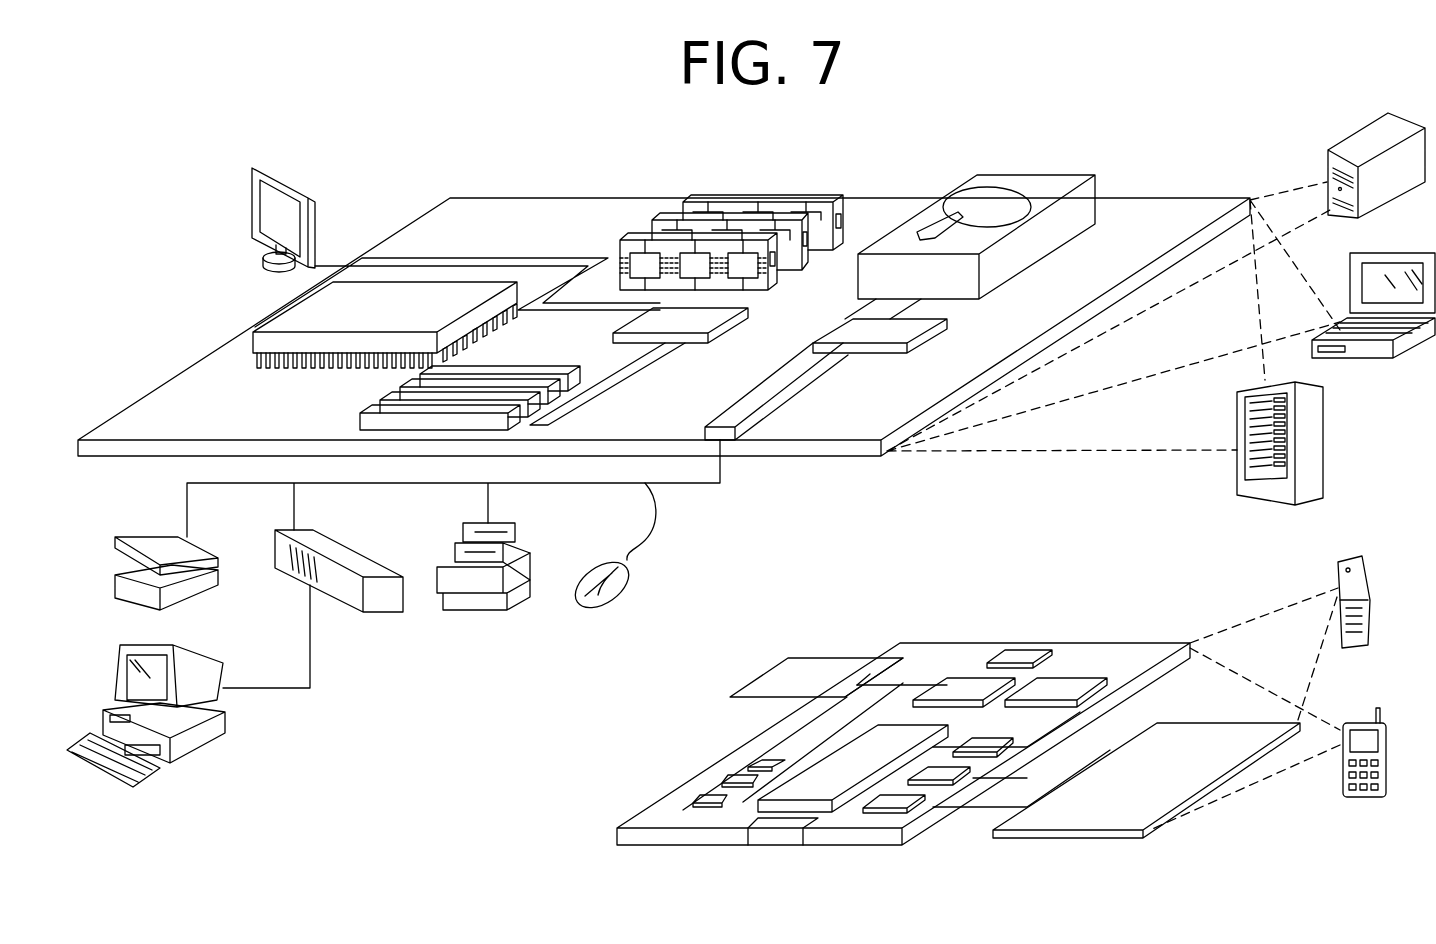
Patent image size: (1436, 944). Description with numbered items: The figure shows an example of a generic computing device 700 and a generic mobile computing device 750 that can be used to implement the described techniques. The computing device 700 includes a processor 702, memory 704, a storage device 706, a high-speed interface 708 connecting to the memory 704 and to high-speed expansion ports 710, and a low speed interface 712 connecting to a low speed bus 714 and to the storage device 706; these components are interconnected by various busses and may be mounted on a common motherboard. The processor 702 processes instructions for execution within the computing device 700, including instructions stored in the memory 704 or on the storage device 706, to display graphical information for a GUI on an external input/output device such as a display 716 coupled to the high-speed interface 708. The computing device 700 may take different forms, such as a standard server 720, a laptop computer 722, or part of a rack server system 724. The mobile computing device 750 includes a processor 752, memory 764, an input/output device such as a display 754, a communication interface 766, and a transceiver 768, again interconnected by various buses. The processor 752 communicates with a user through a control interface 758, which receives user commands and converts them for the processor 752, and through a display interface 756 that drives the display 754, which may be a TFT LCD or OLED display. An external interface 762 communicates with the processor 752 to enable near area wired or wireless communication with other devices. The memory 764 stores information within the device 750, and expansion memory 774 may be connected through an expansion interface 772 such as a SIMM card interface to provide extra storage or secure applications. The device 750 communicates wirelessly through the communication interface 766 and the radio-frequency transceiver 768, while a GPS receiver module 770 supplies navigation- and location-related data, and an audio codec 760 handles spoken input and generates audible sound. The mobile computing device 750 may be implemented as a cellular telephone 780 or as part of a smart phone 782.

The computing device 700 is at (398, 146).
The processor 702 is at (278, 312).
The memory 704 is at (766, 195).
The storage device 706 is at (1012, 173).
The high-speed interface 708 is at (695, 317).
The high-speed expansion ports 710 is at (393, 397).
The low speed interface 712 is at (851, 322).
The low speed bus 714 is at (728, 424).
The display 716 is at (257, 167).
The standard server 720 is at (1347, 144).
The laptop computer 722 is at (1425, 252).
The rack server system 724 is at (1333, 445).
The mobile computing device 750 is at (568, 854).
The processor 752 is at (818, 773).
The display 754 is at (1188, 740).
The display interface 756 is at (905, 800).
The control interface 758 is at (948, 770).
The audio codec 760 is at (993, 736).
The external interface 762 is at (776, 830).
The memory 764 is at (727, 778).
The communication interface 766 is at (963, 677).
The transceiver 768 is at (1065, 680).
The GPS receiver module 770 is at (1020, 652).
The expansion interface 772 is at (881, 655).
The expansion memory 774 is at (790, 657).
The cellular telephone 780 is at (1350, 560).
The smart phone 782 is at (1358, 721).